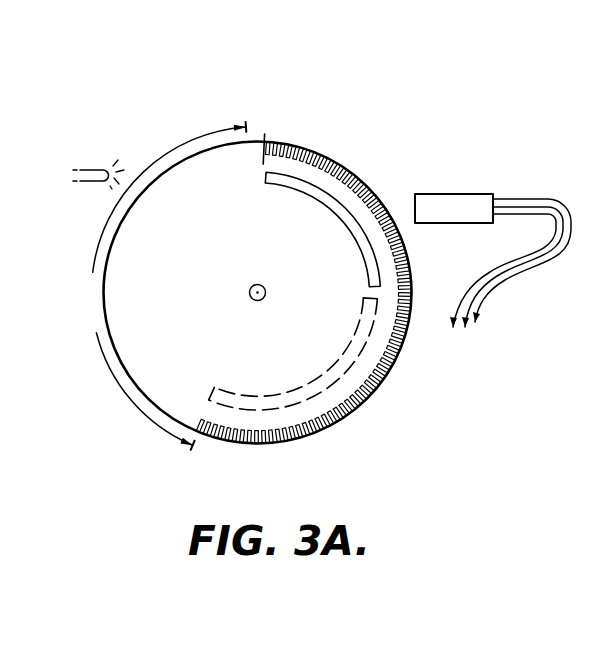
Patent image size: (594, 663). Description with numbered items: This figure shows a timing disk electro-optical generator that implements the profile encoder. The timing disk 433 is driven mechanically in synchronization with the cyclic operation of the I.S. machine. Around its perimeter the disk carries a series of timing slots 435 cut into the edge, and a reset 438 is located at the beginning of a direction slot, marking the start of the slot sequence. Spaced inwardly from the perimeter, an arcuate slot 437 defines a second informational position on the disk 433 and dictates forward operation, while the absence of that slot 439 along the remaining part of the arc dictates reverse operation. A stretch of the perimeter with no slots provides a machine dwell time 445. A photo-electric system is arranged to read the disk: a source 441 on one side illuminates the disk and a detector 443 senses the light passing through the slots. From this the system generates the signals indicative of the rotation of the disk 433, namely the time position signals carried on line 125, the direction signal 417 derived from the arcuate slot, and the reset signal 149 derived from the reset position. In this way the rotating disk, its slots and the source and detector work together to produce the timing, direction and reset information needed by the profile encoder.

The timing disk 433 is at (207, 307).
The timing slots 435 is at (347, 171).
The arcuate direction slot 437 is at (366, 244).
The absence of slot 439 is at (263, 399).
The reset 438 is at (264, 135).
The machine dwell time 445 is at (150, 286).
The source 441 is at (97, 164).
The detector 443 is at (443, 223).
The optical fiber 125 is at (453, 328).
The direction signal 417 is at (466, 327).
The reset signal 149 is at (478, 323).